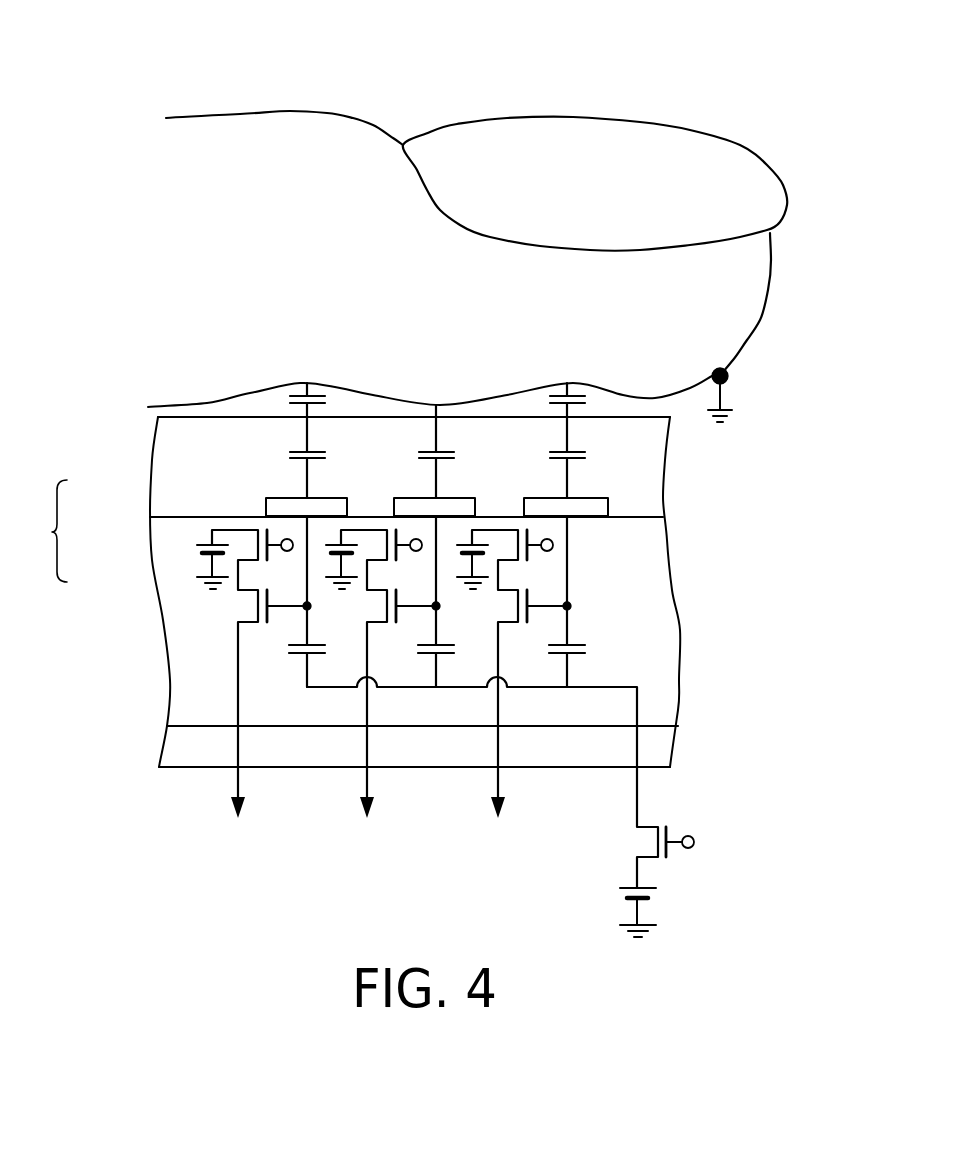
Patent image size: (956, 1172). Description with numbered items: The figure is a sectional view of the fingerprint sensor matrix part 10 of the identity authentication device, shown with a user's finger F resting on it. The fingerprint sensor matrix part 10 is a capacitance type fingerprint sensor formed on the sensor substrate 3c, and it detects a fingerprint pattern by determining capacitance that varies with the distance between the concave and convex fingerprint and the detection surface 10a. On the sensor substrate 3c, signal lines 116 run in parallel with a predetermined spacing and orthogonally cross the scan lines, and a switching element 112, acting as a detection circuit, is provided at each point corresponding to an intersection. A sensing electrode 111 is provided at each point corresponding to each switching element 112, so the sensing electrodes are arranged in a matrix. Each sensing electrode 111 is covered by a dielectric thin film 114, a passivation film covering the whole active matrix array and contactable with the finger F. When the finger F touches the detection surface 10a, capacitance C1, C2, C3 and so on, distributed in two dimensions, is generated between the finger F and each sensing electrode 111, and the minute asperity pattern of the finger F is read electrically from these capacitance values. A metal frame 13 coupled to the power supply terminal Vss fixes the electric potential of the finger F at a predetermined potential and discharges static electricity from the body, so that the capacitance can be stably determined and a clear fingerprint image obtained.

The finger F is at (347, 138).
The fingerprint sensor matrix part 10 is at (784, 457).
The detection surface 10a is at (220, 417).
The metal frame 13 is at (730, 380).
The dielectric thin film 114 is at (173, 450).
The sensing electrode 111 is at (273, 507).
The switching element 112 is at (231, 603).
The signal lines 116 is at (498, 778).
The sensor substrate 3c is at (658, 748).
The capacitance C1 is at (458, 451).
The capacitance C2 is at (326, 401).
The capacitance C3 is at (586, 401).